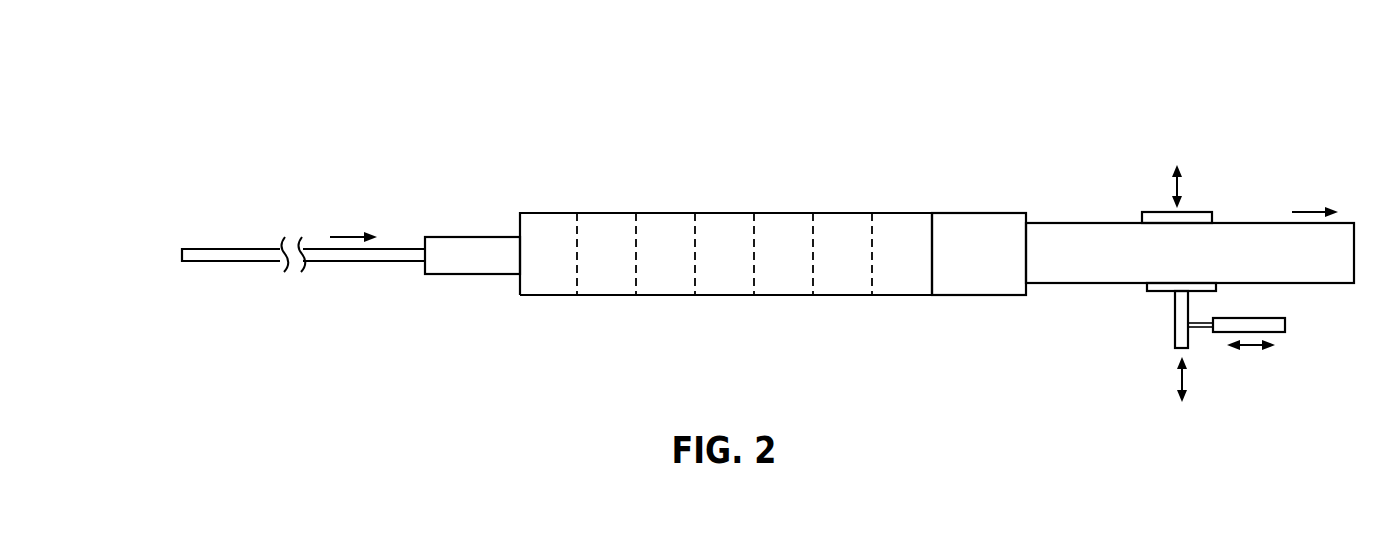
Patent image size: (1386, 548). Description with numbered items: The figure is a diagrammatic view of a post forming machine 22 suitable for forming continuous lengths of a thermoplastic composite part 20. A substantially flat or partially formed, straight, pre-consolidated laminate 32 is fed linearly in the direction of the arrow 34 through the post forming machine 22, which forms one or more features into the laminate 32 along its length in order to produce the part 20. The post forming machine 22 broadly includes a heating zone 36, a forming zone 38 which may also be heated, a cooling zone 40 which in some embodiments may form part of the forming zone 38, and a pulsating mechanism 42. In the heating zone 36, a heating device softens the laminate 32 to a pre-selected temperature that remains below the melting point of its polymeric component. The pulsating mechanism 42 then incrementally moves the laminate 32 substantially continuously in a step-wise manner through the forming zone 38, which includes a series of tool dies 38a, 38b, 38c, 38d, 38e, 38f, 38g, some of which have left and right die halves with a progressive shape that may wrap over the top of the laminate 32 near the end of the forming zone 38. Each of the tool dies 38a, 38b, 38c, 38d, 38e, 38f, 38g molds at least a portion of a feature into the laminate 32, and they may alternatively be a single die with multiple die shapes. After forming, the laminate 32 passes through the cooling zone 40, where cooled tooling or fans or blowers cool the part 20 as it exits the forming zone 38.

The part 20 is at (1328, 263).
The post forming machine 22 is at (462, 88).
The laminate 32 is at (361, 256).
The arrow 34 is at (349, 232).
The heating zone 36 is at (474, 250).
The forming zone 38 is at (932, 183).
The tool die 38a is at (547, 278).
The tool die 38b is at (606, 278).
The tool die 38c is at (665, 278).
The tool die 38d is at (724, 278).
The tool die 38e is at (782, 278).
The tool die 38f is at (841, 278).
The tool die 38g is at (901, 278).
The cooling zone 40 is at (983, 227).
The pulsating mechanism 42 is at (1196, 211).